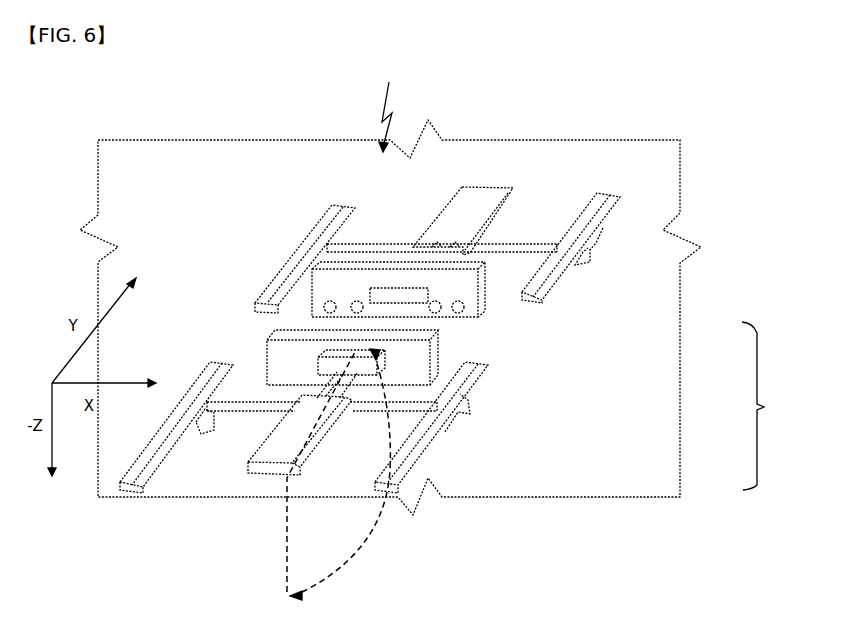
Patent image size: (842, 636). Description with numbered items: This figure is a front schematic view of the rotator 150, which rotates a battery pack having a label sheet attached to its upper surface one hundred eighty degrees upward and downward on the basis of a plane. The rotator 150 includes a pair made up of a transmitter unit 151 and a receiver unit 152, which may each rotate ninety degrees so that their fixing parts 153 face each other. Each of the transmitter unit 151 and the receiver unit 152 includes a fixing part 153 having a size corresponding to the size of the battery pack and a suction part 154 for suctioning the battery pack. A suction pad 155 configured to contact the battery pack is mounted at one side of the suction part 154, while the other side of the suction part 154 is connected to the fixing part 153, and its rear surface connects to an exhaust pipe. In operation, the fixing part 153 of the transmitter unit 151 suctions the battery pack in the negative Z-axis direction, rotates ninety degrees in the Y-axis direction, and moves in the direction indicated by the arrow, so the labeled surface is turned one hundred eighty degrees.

The rotator 150 is at (442, 317).
The transmitter unit 151 is at (447, 465).
The receiver unit 152 is at (449, 287).
The fixing part 153 is at (332, 268).
The suction part 154 is at (465, 298).
The suction pad 155 is at (436, 312).